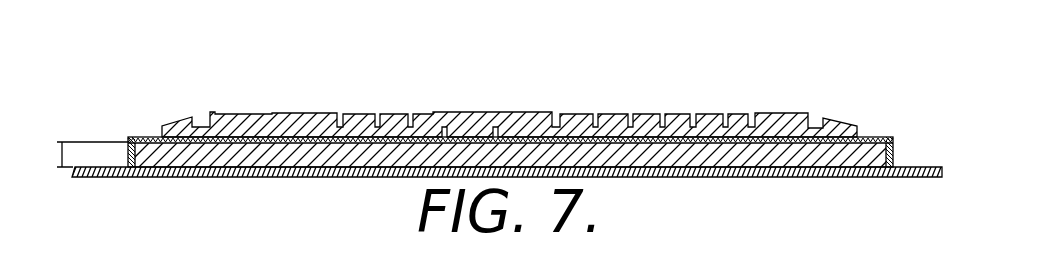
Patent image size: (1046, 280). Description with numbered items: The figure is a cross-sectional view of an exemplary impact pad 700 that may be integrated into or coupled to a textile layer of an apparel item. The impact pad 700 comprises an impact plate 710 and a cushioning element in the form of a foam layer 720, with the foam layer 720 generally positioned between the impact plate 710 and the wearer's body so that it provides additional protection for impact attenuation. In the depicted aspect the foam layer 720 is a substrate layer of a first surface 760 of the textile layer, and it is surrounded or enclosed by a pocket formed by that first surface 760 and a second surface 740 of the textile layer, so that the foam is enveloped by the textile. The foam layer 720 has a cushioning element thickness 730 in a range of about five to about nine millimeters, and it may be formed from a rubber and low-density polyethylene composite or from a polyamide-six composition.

The impact pad 700 is at (602, 49).
The impact plate 710 is at (843, 122).
The foam layer 720 is at (840, 160).
The cushioning element thickness 730 is at (55, 160).
The second surface of textile layer 740 is at (103, 178).
The first surface of textile layer 760 is at (893, 137).